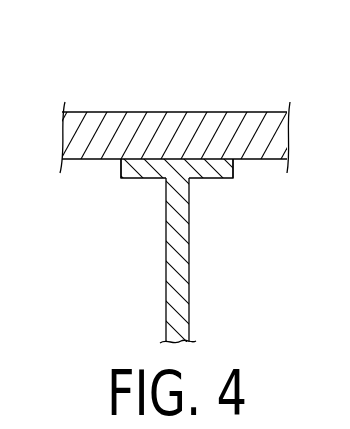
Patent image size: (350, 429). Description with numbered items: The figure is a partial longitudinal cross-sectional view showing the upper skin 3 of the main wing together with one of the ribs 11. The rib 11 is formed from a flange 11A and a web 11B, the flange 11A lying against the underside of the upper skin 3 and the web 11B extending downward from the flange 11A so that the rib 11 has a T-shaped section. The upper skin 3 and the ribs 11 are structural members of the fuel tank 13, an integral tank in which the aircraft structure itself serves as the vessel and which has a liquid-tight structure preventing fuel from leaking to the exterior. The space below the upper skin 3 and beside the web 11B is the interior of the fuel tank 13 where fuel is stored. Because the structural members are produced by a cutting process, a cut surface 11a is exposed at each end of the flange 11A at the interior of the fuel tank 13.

The upper skin 3 is at (183, 112).
The rib 11 is at (130, 232).
The flange 11A is at (135, 178).
The web 11B is at (60, 225).
The cut surface 11a is at (121, 170).
The fuel tank 13 is at (235, 304).